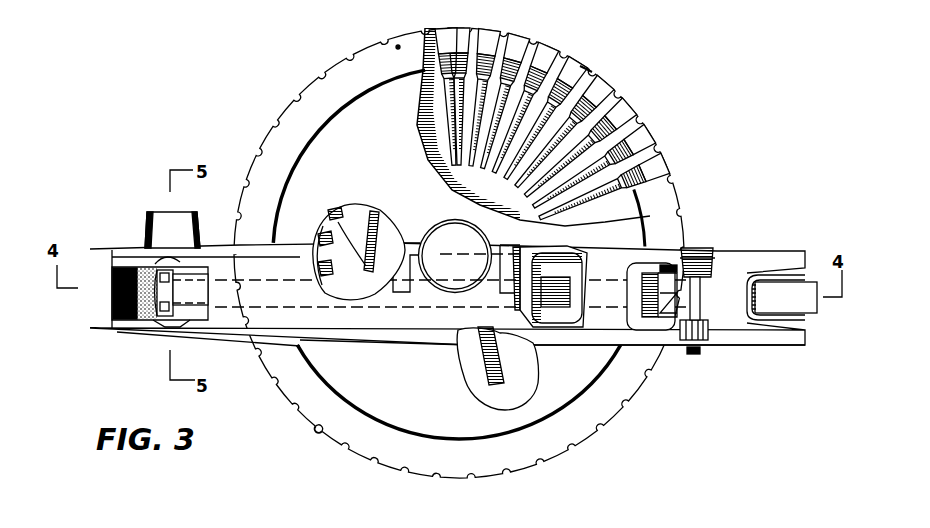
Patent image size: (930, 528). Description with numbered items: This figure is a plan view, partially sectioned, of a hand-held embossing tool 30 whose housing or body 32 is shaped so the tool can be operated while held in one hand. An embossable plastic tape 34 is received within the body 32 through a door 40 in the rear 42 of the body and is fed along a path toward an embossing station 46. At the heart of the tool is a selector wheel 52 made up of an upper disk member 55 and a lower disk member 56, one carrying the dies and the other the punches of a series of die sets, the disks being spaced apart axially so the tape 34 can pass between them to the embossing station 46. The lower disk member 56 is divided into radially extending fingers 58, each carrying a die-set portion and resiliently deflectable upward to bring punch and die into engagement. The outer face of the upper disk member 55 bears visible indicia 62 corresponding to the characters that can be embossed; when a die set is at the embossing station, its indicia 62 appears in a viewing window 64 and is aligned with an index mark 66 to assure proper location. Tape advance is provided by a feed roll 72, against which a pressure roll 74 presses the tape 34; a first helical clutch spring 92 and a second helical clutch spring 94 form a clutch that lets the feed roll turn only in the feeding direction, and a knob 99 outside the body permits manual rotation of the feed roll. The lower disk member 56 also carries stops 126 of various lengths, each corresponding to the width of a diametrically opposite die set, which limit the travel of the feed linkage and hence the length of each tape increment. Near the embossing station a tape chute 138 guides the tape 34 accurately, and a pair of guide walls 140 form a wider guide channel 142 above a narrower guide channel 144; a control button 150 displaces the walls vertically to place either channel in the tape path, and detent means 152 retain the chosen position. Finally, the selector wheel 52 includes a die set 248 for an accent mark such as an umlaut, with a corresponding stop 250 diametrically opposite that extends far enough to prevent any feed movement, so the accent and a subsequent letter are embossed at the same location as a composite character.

The embossing tool 30 is at (373, 346).
The housing or body 32 is at (414, 344).
The tape 34 is at (200, 292).
The door 40 is at (96, 305).
The rear 42 is at (92, 329).
The embossing station 46 is at (630, 322).
The selector wheel 52 is at (281, 104).
The upper disk member 55 is at (384, 161).
The lower disk member 56 is at (502, 195).
The fingers 58 is at (588, 70).
The indicia 62 is at (324, 428).
The viewing window 64 is at (641, 242).
The index mark 66 is at (640, 266).
The feed roll 72 is at (133, 308).
The pressure roll 74 is at (162, 310).
The first helical clutch spring 92 is at (184, 259).
The second helical clutch spring 94 is at (169, 314).
The knob 99 is at (158, 226).
The stops 126 is at (340, 236).
The tape chute 138 is at (572, 254).
The guide walls 140 is at (713, 258).
The guide channel 142 is at (705, 308).
The guide channel 144 is at (714, 282).
The control button 150 is at (693, 355).
The detent means 152 is at (700, 247).
The die set 248 is at (396, 46).
The stop 250 is at (480, 400).